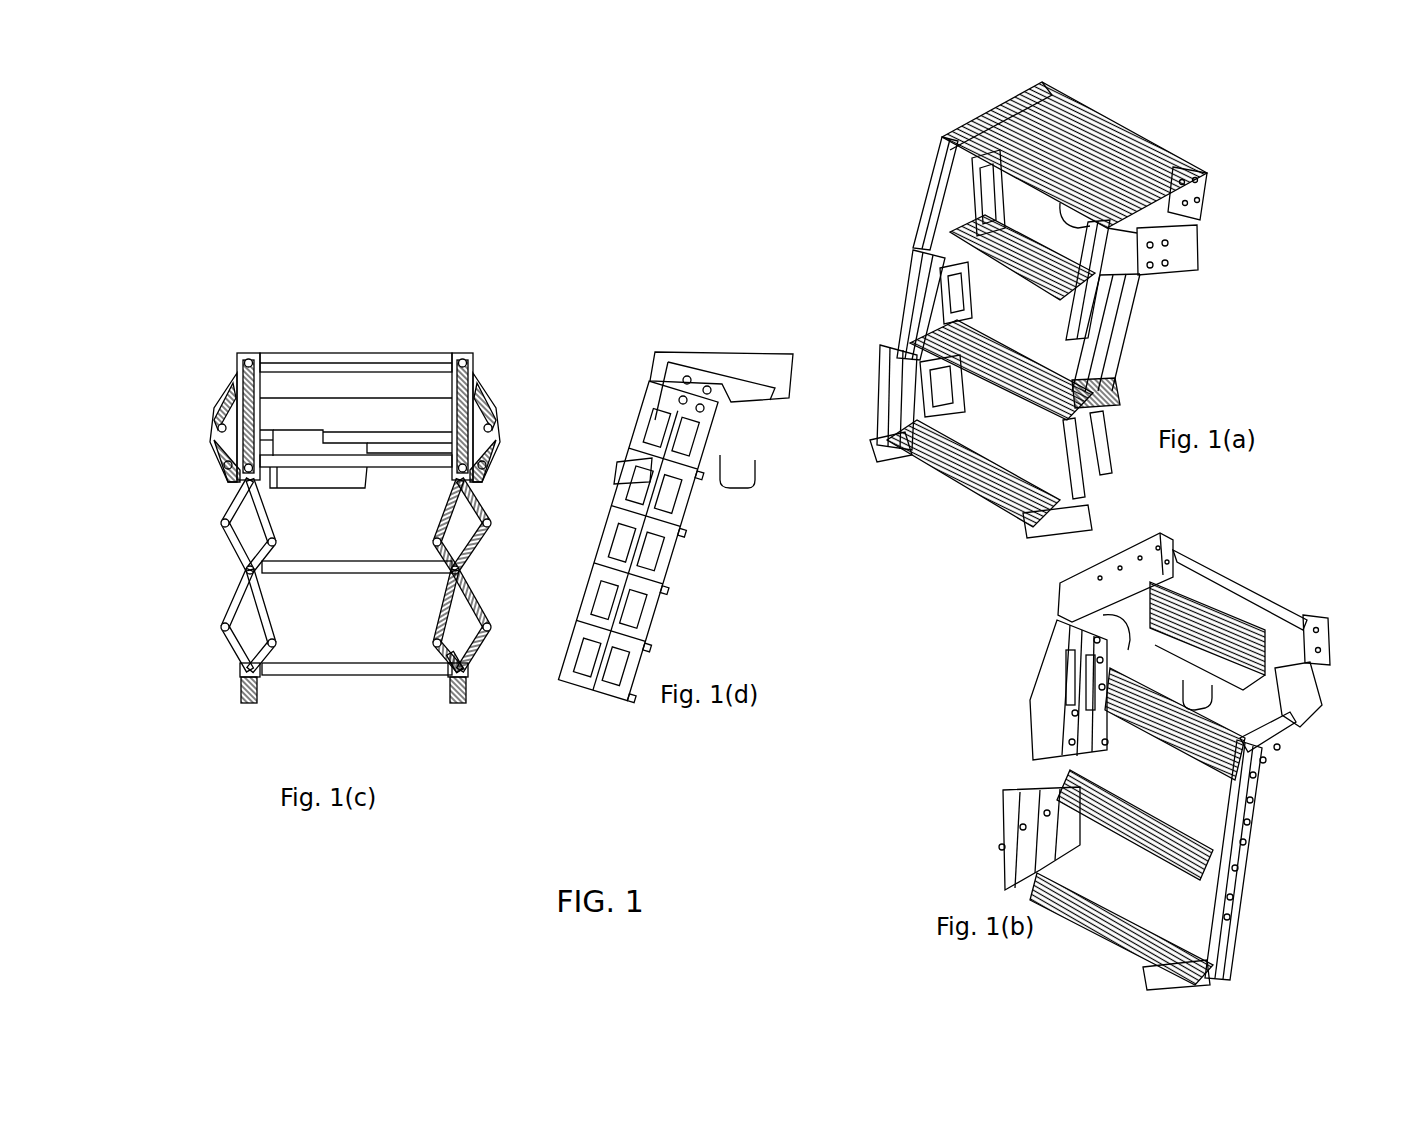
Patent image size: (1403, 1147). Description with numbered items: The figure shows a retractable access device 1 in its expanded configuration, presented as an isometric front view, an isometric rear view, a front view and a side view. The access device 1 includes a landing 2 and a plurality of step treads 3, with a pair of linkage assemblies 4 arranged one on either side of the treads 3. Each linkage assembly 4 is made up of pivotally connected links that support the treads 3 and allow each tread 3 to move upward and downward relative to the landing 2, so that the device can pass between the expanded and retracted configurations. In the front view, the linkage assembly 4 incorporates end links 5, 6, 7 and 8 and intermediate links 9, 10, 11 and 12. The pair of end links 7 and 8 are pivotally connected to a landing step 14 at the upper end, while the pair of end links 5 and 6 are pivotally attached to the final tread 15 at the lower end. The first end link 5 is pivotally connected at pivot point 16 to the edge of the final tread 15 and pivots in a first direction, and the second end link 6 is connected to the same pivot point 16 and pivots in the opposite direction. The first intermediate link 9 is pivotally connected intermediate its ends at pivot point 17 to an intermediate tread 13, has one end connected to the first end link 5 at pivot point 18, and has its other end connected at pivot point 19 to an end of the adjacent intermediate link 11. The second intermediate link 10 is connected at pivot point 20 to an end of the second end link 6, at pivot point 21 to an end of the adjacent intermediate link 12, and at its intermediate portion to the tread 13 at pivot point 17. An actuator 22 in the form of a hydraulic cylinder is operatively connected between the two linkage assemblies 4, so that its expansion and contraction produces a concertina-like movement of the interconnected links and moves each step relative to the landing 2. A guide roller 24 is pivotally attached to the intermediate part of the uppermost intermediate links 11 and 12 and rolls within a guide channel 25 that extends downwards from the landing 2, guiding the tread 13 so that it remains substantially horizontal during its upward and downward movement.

In FIG. 1C, the access device 1 is at (318, 222).
In FIG. 1D, the access device 1 is at (686, 328).
In FIG. 1A, the access device 1 is at (1120, 97).
In FIG. 1B, the access device 1 is at (1260, 547).
In FIG. 1C, the landing 2 is at (330, 355).
In FIG. 1D, the landing 2 is at (723, 345).
In FIG. 1A, the landing 2 is at (1132, 142).
In FIG. 1C, the step treads 3 is at (365, 576).
In FIG. 1D, the step treads 3 is at (600, 568).
In FIG. 1A, the step treads 3 is at (990, 385).
In FIG. 1C, the linkage assemblies 4 is at (188, 316).
In FIG. 1A, the linkage assemblies 4 is at (890, 293).
In FIG. 1B, the linkage assemblies 4 is at (1015, 718).
In FIG. 1C, the first end link 5 is at (440, 656).
In FIG. 1C, the second end link 6 is at (474, 652).
In FIG. 1C, the end link 7 is at (446, 415).
In FIG. 1C, the end link 8 is at (481, 413).
In FIG. 1C, the first intermediate link 9 is at (466, 563).
In FIG. 1C, the second intermediate link 10 is at (472, 603).
In FIG. 1C, the intermediate link 11 is at (484, 508).
In FIG. 1C, the intermediate link 12 is at (479, 438).
In FIG. 1C, the intermediate treads 13 is at (300, 561).
In FIG. 1C, the landing step 14 is at (277, 355).
In FIG. 1C, the final tread 15 is at (380, 676).
In FIG. 1C, the pivot point 16 is at (460, 703).
In FIG. 1C, the pivot point 17 is at (457, 573).
In FIG. 1C, the pivot point 18 is at (440, 643).
In FIG. 1C, the pivot point 19 is at (481, 523).
In FIG. 1C, the pivot point 20 is at (490, 628).
In FIG. 1C, the pivot point 21 is at (438, 538).
In FIG. 1C, the actuator 22 is at (298, 433).
In FIG. 1D, the actuator 22 is at (740, 481).
In FIG. 1A, the actuator 22 is at (1082, 218).
In FIG. 1B, the actuator 22 is at (1252, 716).
In FIG. 1C, the guide roller 24 is at (240, 463).
In FIG. 1D, the guide roller 24 is at (640, 465).
In FIG. 1A, the guide roller 24 is at (930, 243).
In FIG. 1C, the guide channel 25 is at (243, 441).
In FIG. 1D, the guide channel 25 is at (655, 395).
In FIG. 1A, the guide channel 25 is at (925, 197).